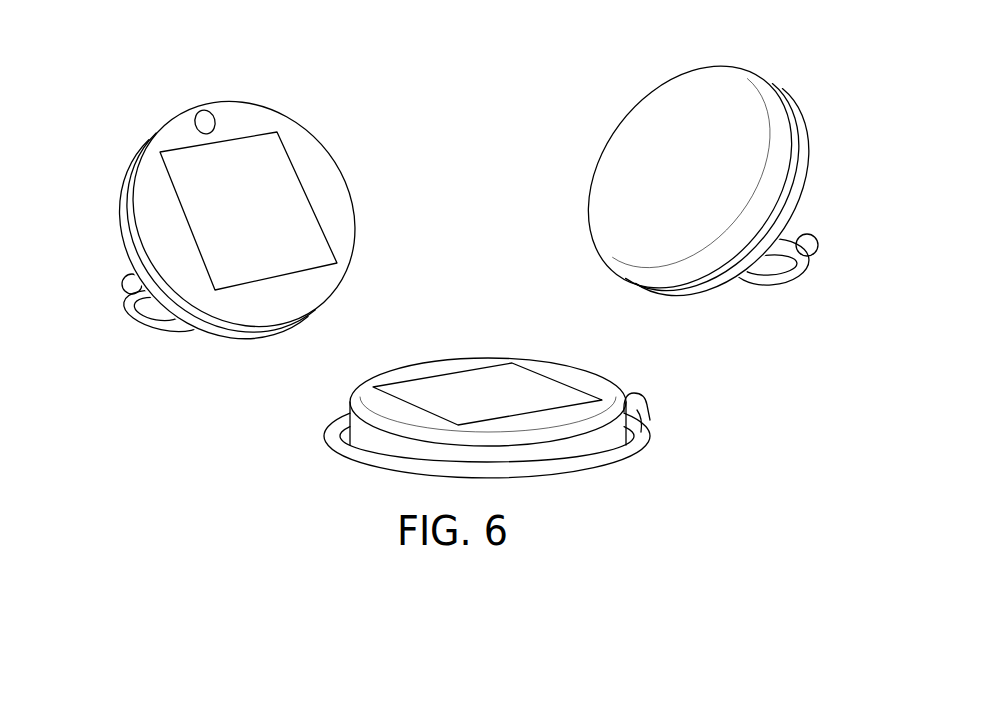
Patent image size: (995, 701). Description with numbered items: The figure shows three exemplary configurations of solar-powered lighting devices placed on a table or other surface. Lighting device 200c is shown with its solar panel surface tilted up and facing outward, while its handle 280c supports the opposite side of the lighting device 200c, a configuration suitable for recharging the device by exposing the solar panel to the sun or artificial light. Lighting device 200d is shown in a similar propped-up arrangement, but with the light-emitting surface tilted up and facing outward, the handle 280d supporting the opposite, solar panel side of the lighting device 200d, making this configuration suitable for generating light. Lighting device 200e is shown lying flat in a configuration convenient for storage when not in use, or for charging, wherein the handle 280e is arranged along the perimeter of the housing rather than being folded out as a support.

The lighting device 200c is at (142, 97).
The handle 280c is at (123, 306).
The lighting device 200d is at (618, 89).
The handle 280d is at (774, 285).
The lighting device 200e is at (658, 448).
The handle 280e is at (325, 425).